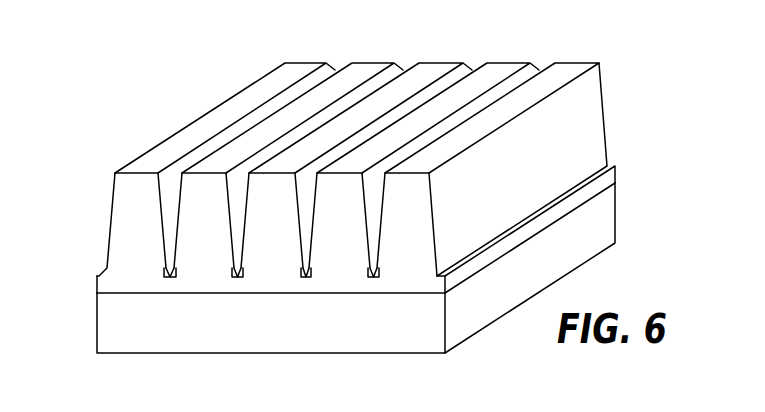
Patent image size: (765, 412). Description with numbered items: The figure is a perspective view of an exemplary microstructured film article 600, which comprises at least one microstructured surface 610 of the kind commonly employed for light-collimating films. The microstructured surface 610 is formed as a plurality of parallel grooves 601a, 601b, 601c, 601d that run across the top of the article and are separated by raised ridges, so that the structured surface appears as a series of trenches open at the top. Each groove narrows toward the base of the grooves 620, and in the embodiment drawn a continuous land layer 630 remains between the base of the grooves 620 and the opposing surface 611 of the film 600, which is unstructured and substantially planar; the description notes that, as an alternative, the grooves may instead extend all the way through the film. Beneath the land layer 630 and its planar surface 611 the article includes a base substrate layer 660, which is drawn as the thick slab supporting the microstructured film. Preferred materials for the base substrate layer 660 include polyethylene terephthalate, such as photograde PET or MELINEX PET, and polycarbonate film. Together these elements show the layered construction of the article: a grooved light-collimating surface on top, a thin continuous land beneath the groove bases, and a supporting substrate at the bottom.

The microstructured film article 600 is at (623, 60).
The groove 601a is at (341, 62).
The groove 601b is at (408, 62).
The groove 601c is at (475, 62).
The groove 601d is at (543, 62).
The microstructured surface 610 is at (338, 128).
The opposing surface 611 is at (288, 294).
The base of the grooves 620 is at (168, 268).
The continuous land layer 630 is at (91, 294).
The base substrate layer 660 is at (189, 334).